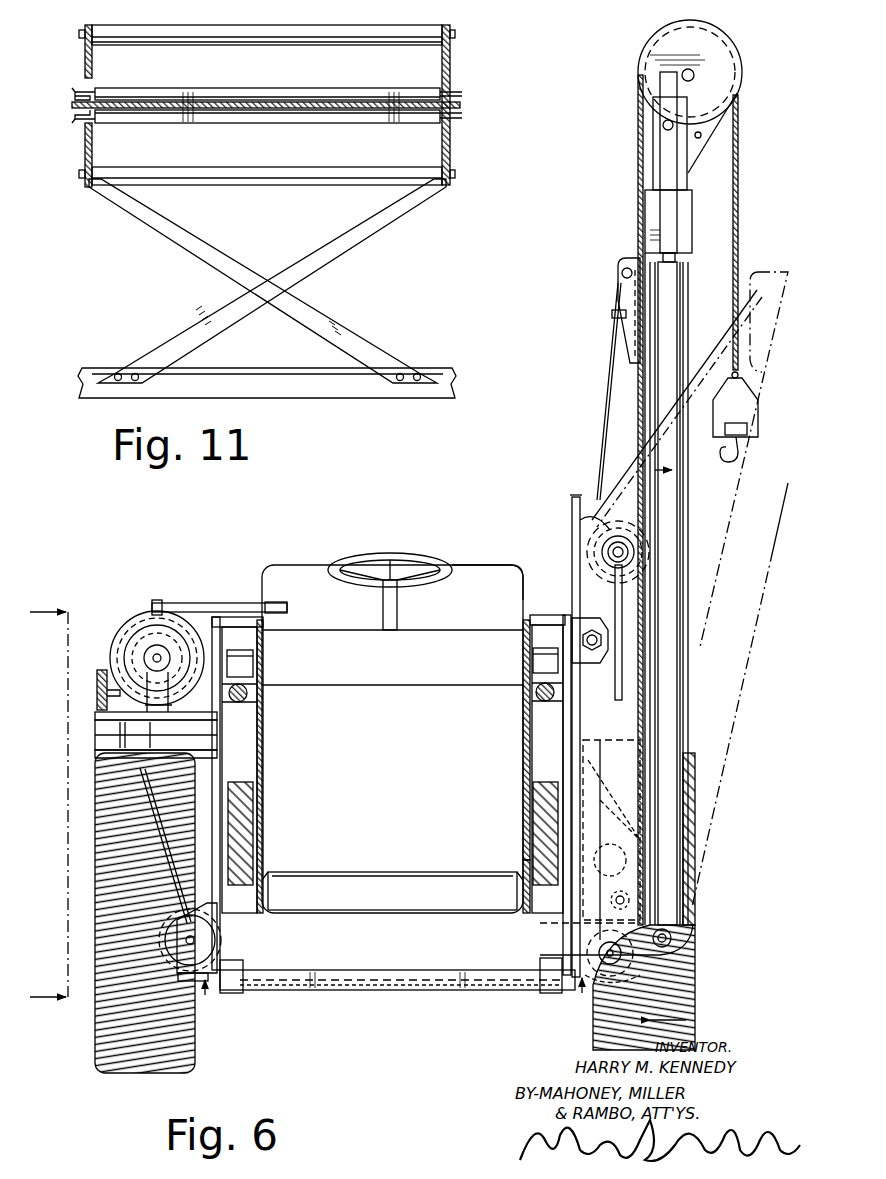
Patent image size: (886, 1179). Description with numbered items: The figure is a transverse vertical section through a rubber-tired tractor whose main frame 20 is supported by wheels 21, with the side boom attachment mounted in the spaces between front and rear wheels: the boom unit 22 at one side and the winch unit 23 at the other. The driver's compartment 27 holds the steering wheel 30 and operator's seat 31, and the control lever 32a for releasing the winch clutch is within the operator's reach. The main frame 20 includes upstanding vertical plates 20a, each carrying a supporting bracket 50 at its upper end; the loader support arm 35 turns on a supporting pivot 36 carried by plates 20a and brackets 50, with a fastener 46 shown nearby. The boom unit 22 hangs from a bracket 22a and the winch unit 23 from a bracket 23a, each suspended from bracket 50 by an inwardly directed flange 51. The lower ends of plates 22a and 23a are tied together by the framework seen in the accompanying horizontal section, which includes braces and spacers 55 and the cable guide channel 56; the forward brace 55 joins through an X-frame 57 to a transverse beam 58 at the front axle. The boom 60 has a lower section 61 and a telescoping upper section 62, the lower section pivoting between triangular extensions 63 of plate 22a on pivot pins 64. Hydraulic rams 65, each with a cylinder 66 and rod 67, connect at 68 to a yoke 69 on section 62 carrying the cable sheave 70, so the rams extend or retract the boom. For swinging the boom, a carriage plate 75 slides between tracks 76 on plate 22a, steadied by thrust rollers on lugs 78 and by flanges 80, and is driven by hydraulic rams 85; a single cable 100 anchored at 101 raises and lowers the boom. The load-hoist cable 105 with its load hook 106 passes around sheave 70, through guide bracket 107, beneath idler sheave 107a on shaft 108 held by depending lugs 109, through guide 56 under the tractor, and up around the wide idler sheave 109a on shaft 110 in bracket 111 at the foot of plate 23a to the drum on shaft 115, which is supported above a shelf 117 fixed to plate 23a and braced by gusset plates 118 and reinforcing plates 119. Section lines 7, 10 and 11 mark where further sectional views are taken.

In FIG. 6, the main frame 20 is at (437, 917).
In FIG. 6, the upstanding vertical plates 20a is at (263, 800).
In FIG. 6, the wheels 21 is at (95, 1040).
In FIG. 6, the boom unit 22 is at (582, 488).
In FIG. 11, the support plate bracket 22a is at (452, 50).
In FIG. 6, the support plate bracket 22a is at (565, 757).
In FIG. 6, the winch unit 23 is at (138, 608).
In FIG. 11, the winch bracket plate 23a is at (83, 55).
In FIG. 6, the winch bracket plate 23a is at (220, 776).
In FIG. 6, the driver's compartment 27 is at (300, 575).
In FIG. 6, the steering wheel 30 is at (362, 556).
In FIG. 6, the operator's seat 31 is at (464, 570).
In FIG. 6, the control lever 32a is at (256, 604).
In FIG. 6, the support arm 35 is at (248, 820).
In FIG. 6, the supporting pivot 36 is at (255, 668).
In FIG. 6, the bolt 46 is at (247, 715).
In FIG. 6, the supporting bracket 50 is at (262, 640).
In FIG. 6, the inwardly directed flange 51 is at (265, 620).
In FIG. 11, the braces and spacers 55 is at (140, 25).
In FIG. 6, the braces and spacers 55 is at (552, 960).
In FIG. 11, the cable guide and guard channel 56 is at (290, 121).
In FIG. 6, the cable guide and guard channel 56 is at (395, 990).
In FIG. 11, the X-frame 57 is at (186, 328).
In FIG. 11, the transverse beam 58 is at (102, 367).
In FIG. 6, the boom 60 is at (653, 212).
In FIG. 6, the lower boom section 61 is at (688, 543).
In FIG. 6, the upper boom section 62 is at (653, 153).
In FIG. 6, the triangular extensions 63 is at (583, 906).
In FIG. 6, the pivot pins 64 is at (672, 940).
In FIG. 6, the hydraulic rams 65 is at (680, 325).
In FIG. 6, the cylinder 66 is at (681, 497).
In FIG. 6, the piston rod 67 is at (676, 258).
In FIG. 6, the rod connection 68 is at (663, 125).
In FIG. 6, the yoke 69 is at (682, 79).
In FIG. 6, the cable sheave 70 is at (737, 95).
In FIG. 6, the carriage plate 75 is at (572, 500).
In FIG. 6, the guide tracks 76 is at (530, 868).
In FIG. 6, the lugs 78 is at (582, 616).
In FIG. 6, the flanges 80 is at (590, 538).
In FIG. 6, the hydraulic rams 85 is at (655, 745).
In FIG. 6, the boom cable 100 is at (605, 380).
In FIG. 6, the cable anchoring point 101 is at (618, 272).
In FIG. 11, the load-hoist cable 105 is at (234, 103).
In FIG. 6, the load-hoist cable 105 is at (290, 973).
In FIG. 6, the load hook 106 is at (738, 458).
In FIG. 6, the guide bracket 107 is at (612, 316).
In FIG. 6, the idler sheave 107a is at (540, 924).
In FIG. 6, the shaft 108 is at (600, 975).
In FIG. 6, the depending lugs 109 is at (690, 975).
In FIG. 6, the idler sheave 109a is at (192, 985).
In FIG. 6, the shaft 110 is at (197, 948).
In FIG. 6, the bracket 111 is at (207, 925).
In FIG. 6, the drum shaft 115 is at (112, 645).
In FIG. 6, the shelf 117 is at (100, 738).
In FIG. 6, the gusset plates 118 is at (130, 768).
In FIG. 6, the reinforcing plates 119 is at (98, 753).
In FIG. 6, the section line 7 is at (668, 733).
In FIG. 6, the section line 10 is at (62, 806).
In FIG. 6, the section line 11 is at (394, 998).